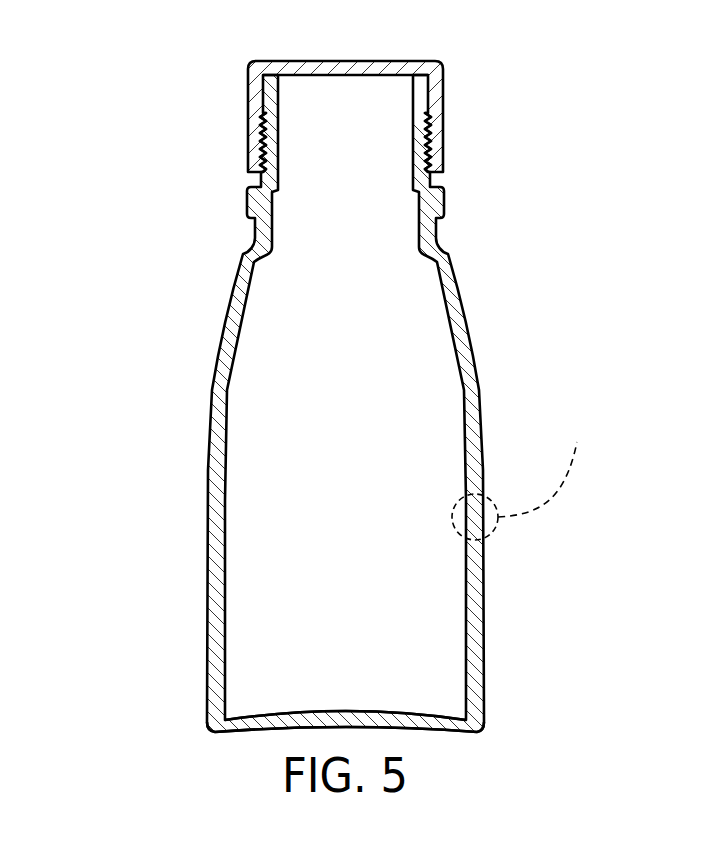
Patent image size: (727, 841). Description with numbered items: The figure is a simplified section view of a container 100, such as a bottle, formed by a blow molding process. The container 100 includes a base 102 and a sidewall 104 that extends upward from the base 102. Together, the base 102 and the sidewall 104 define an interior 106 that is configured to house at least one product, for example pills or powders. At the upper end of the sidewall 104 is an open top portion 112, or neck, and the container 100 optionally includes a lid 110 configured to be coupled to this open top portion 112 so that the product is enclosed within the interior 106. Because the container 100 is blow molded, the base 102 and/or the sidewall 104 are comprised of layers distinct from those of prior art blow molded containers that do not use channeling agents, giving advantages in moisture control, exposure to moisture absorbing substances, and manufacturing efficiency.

The container 100 is at (110, 107).
The base 102 is at (265, 735).
The sidewall 104 is at (208, 423).
The interior 106 is at (354, 413).
The lid 110 is at (436, 92).
The open top portion 112 is at (272, 113).